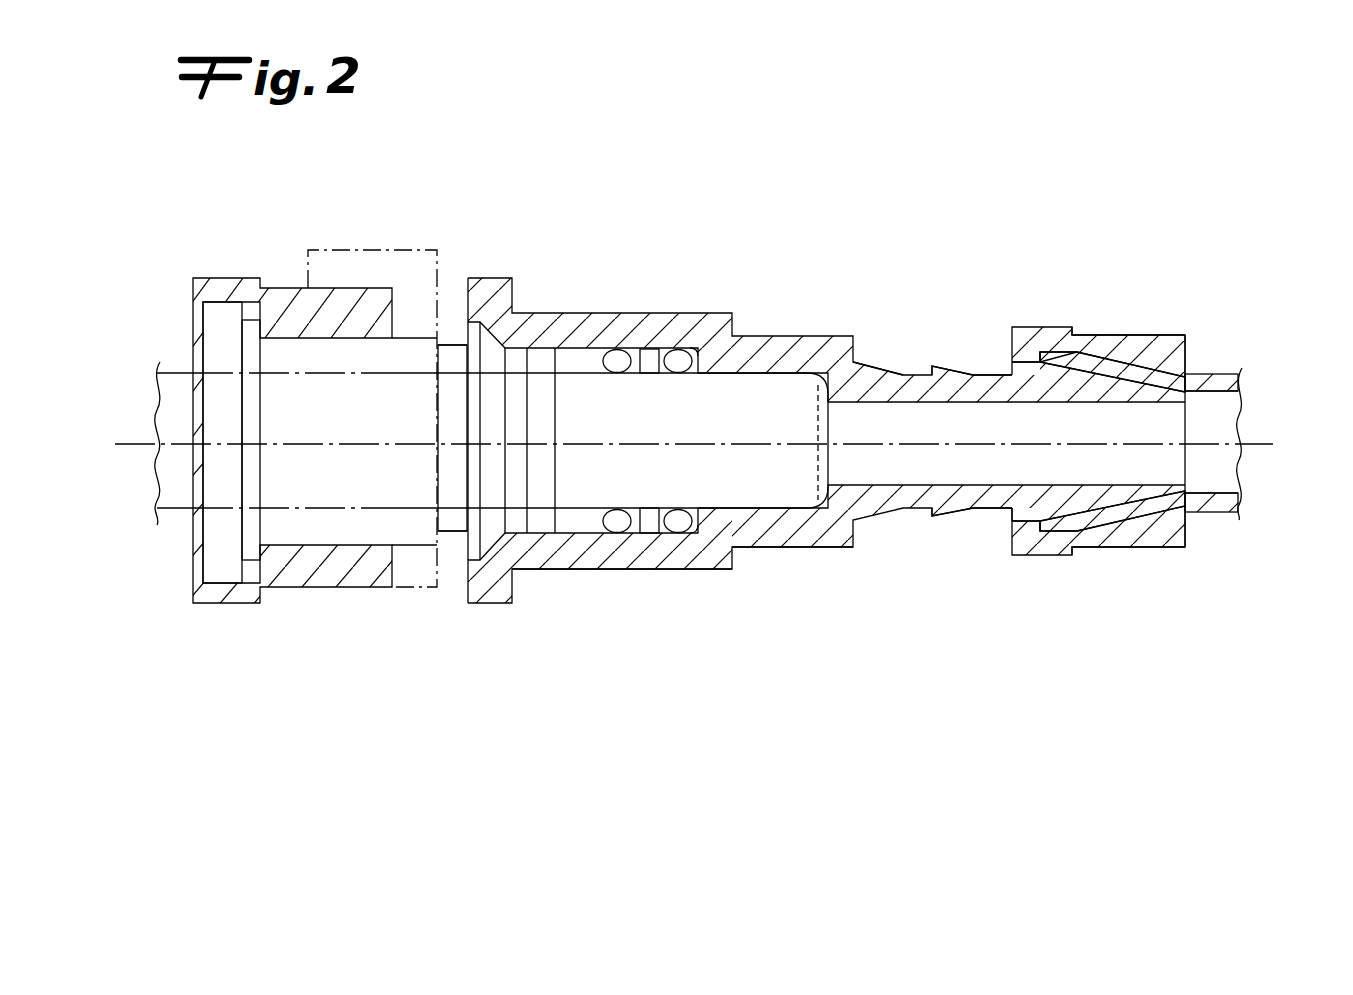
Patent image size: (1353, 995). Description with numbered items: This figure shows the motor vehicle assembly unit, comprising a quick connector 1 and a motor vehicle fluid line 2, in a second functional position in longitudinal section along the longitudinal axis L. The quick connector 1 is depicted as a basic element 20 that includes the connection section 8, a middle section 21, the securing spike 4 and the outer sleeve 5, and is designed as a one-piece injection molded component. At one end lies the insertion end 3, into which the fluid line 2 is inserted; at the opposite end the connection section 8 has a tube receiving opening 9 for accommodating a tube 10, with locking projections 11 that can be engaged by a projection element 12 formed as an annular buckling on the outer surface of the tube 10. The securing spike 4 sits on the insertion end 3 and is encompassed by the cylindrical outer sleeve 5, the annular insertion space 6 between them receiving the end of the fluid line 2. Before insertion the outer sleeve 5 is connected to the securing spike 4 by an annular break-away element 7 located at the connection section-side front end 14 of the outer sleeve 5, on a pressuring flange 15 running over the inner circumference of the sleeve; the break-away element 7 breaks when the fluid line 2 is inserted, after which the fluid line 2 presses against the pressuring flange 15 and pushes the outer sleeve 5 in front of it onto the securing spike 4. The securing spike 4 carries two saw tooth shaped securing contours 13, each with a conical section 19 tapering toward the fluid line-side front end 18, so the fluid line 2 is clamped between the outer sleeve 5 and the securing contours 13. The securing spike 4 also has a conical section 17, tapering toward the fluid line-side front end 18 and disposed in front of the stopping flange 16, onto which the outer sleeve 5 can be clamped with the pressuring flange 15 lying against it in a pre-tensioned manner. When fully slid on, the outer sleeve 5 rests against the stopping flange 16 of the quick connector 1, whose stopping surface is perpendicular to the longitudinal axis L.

The quick connector 1 is at (325, 680).
The motor vehicle fluid line 2 is at (1226, 512).
The insertion end 3 is at (1148, 360).
The securing spike 4 is at (1107, 500).
The outer sleeve 5 is at (1151, 553).
The insertion space 6 is at (1173, 358).
The break-away element 7 is at (1010, 368).
The connection section 8 is at (296, 568).
The tube receiving opening 9 is at (600, 345).
The tube 10 is at (587, 360).
The locking projections 11 is at (436, 530).
The projection element 12 is at (455, 523).
The securing contours 13 is at (940, 515).
The connection section-side front end 14 is at (1008, 538).
The pressuring flange 15 is at (1025, 590).
The stopping flange 16 is at (838, 547).
The conical section 17 is at (878, 367).
The fluid line-side front end 18 is at (1195, 410).
The conical section 19 is at (953, 367).
The basic element 20 is at (645, 597).
The middle section 21 is at (597, 553).
The longitudinal axis L is at (1273, 446).